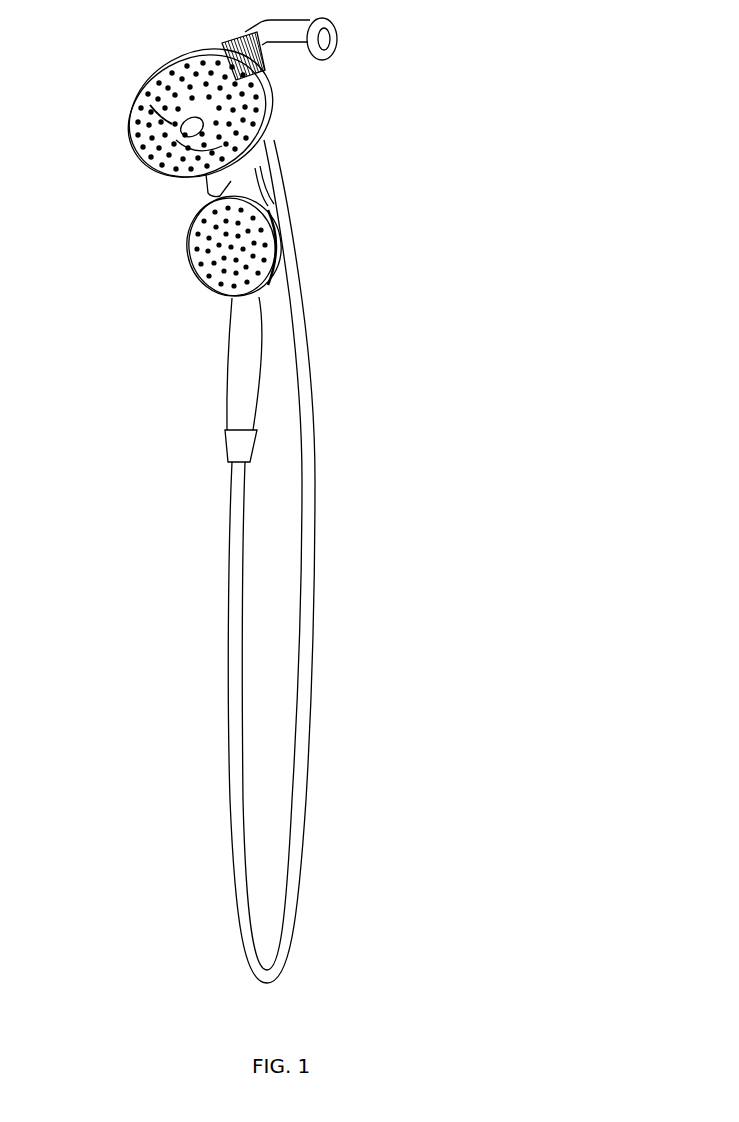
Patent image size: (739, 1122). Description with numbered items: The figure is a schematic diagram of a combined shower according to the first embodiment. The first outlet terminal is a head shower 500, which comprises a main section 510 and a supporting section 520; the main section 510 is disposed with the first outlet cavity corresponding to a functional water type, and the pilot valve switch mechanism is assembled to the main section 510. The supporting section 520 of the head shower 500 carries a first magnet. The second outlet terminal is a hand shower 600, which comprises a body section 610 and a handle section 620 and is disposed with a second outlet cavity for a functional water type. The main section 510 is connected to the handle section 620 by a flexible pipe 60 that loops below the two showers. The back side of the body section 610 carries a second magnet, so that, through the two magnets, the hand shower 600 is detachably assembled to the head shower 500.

The head shower 500 is at (118, 64).
The main section 510 is at (255, 112).
The supporting section 520 is at (258, 186).
The hand shower 600 is at (168, 237).
The body section 610 is at (200, 280).
The handle section 620 is at (245, 392).
The flexible pipe 60 is at (310, 555).